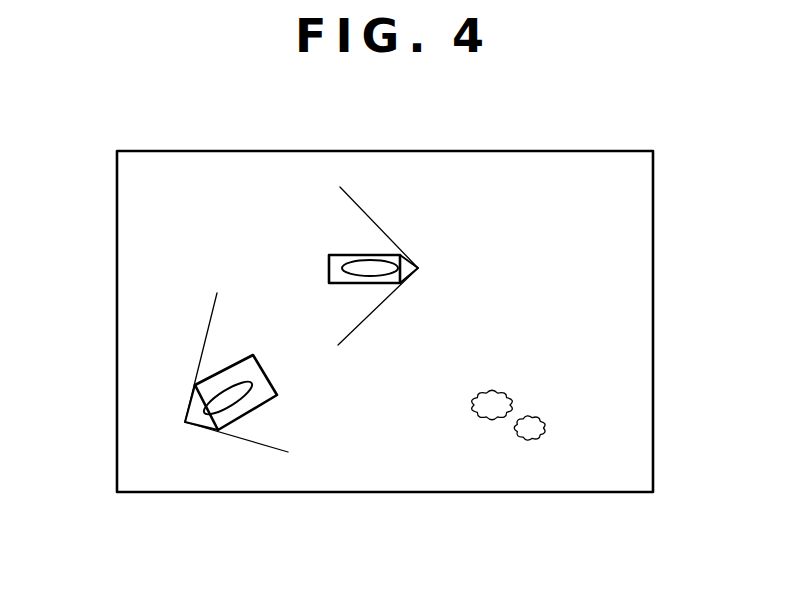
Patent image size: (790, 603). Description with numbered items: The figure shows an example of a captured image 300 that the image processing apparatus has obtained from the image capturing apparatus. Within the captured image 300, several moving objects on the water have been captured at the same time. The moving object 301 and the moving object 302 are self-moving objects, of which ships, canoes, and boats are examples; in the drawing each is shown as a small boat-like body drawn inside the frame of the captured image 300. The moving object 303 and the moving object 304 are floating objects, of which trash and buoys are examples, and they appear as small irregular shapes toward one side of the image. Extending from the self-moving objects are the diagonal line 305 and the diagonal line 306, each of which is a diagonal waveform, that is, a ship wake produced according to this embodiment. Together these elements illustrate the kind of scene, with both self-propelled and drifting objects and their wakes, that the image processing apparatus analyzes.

The captured image 300 is at (207, 151).
The moving object 301 is at (410, 256).
The moving object 302 is at (272, 398).
The moving object 303 is at (502, 403).
The moving object 304 is at (535, 428).
The diagonal line 305 is at (207, 322).
The diagonal line 306 is at (363, 323).